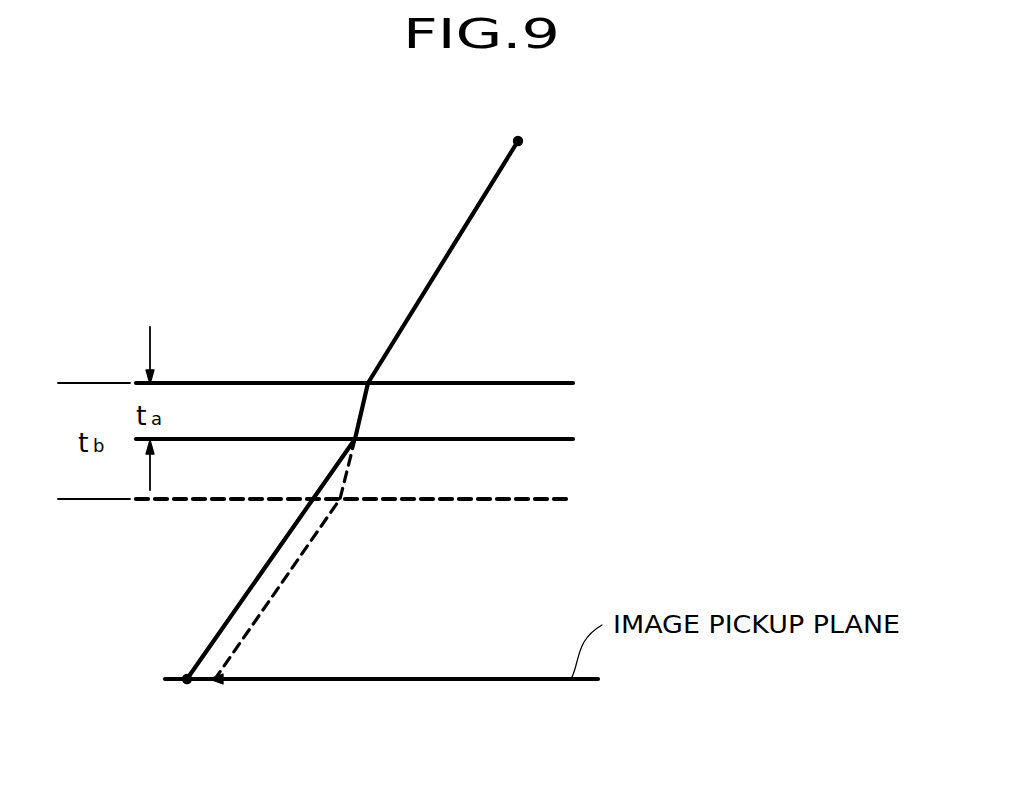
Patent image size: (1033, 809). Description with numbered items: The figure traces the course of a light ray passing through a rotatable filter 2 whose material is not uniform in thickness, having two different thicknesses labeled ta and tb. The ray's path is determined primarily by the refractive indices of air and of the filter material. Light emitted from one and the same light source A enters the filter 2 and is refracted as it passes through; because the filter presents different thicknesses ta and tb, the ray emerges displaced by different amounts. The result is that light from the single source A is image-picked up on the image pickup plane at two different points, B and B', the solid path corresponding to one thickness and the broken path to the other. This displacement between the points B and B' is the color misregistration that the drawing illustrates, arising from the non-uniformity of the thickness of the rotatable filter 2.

The rotatable filter 2 is at (593, 383).
The light source A is at (522, 141).
The image pickup point B is at (165, 714).
The image pickup point B' is at (282, 583).